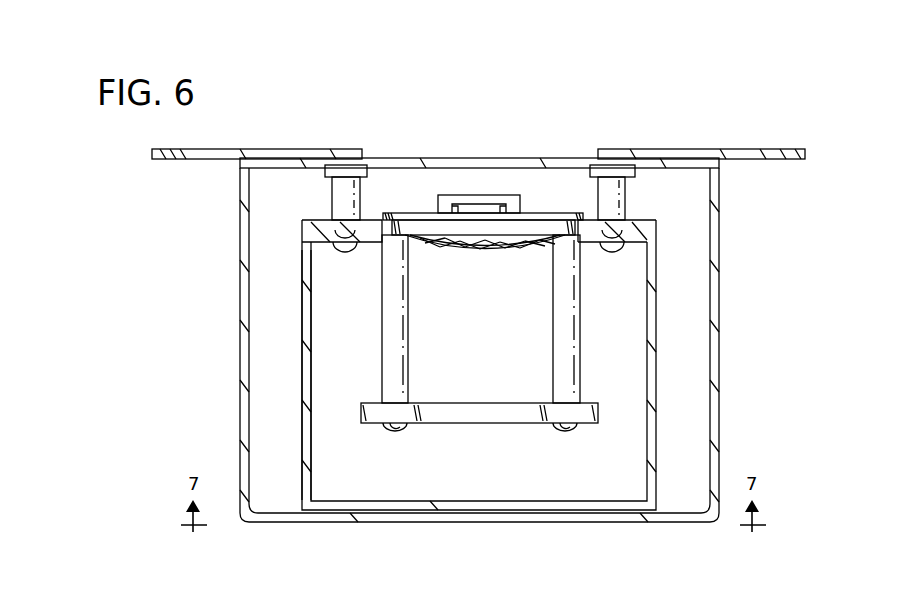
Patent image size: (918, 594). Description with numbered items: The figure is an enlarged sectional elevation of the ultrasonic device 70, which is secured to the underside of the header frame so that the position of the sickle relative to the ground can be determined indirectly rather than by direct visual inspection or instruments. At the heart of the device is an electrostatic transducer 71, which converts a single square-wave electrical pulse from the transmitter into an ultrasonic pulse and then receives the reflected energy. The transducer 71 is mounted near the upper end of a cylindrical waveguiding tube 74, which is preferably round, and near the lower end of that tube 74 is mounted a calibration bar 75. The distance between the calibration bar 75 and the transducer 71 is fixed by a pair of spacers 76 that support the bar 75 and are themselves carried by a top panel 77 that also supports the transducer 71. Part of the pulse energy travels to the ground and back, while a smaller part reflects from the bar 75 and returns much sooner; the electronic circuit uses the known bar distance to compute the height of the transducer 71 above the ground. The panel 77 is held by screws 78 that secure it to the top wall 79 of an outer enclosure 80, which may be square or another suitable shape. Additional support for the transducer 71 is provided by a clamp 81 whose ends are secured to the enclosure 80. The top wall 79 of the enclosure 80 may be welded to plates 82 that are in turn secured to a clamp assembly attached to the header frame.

The ultrasonic device 70 is at (360, 87).
The electrostatic transducer 71 is at (488, 248).
The waveguiding tube 74 is at (305, 357).
The calibration bar 75 is at (462, 418).
The spacers 76 is at (400, 352).
The top panel 77 is at (657, 226).
The screws 78 is at (333, 198).
The top wall 79 is at (536, 157).
The enclosure 80 is at (713, 380).
The clamp 81 is at (500, 199).
The plates 82 is at (277, 149).